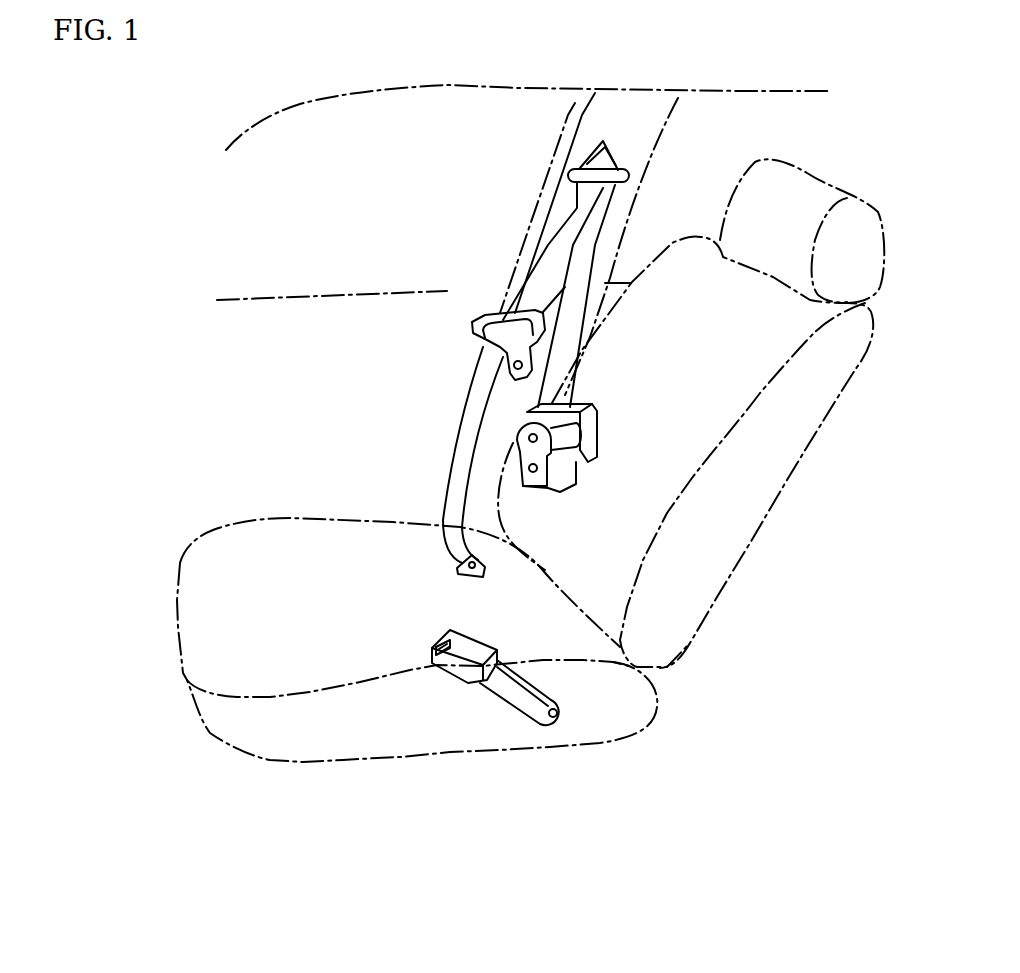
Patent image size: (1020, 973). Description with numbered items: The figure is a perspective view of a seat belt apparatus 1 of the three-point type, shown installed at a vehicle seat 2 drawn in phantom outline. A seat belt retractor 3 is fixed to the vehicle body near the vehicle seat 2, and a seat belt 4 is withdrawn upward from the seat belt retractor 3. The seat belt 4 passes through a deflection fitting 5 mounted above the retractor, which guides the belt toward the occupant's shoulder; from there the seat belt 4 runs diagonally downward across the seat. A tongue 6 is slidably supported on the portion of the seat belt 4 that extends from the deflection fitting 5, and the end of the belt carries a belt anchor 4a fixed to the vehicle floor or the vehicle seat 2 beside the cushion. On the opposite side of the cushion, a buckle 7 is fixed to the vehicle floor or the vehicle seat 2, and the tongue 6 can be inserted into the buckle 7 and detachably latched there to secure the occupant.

The seat belt apparatus 1 is at (633, 515).
The vehicle seat 2 is at (301, 733).
The seat belt retractor 3 is at (597, 430).
The seat belt 4 is at (555, 258).
The belt anchor 4a is at (478, 578).
The deflection fitting 5 is at (607, 147).
The tongue 6 is at (473, 332).
The buckle 7 is at (441, 665).